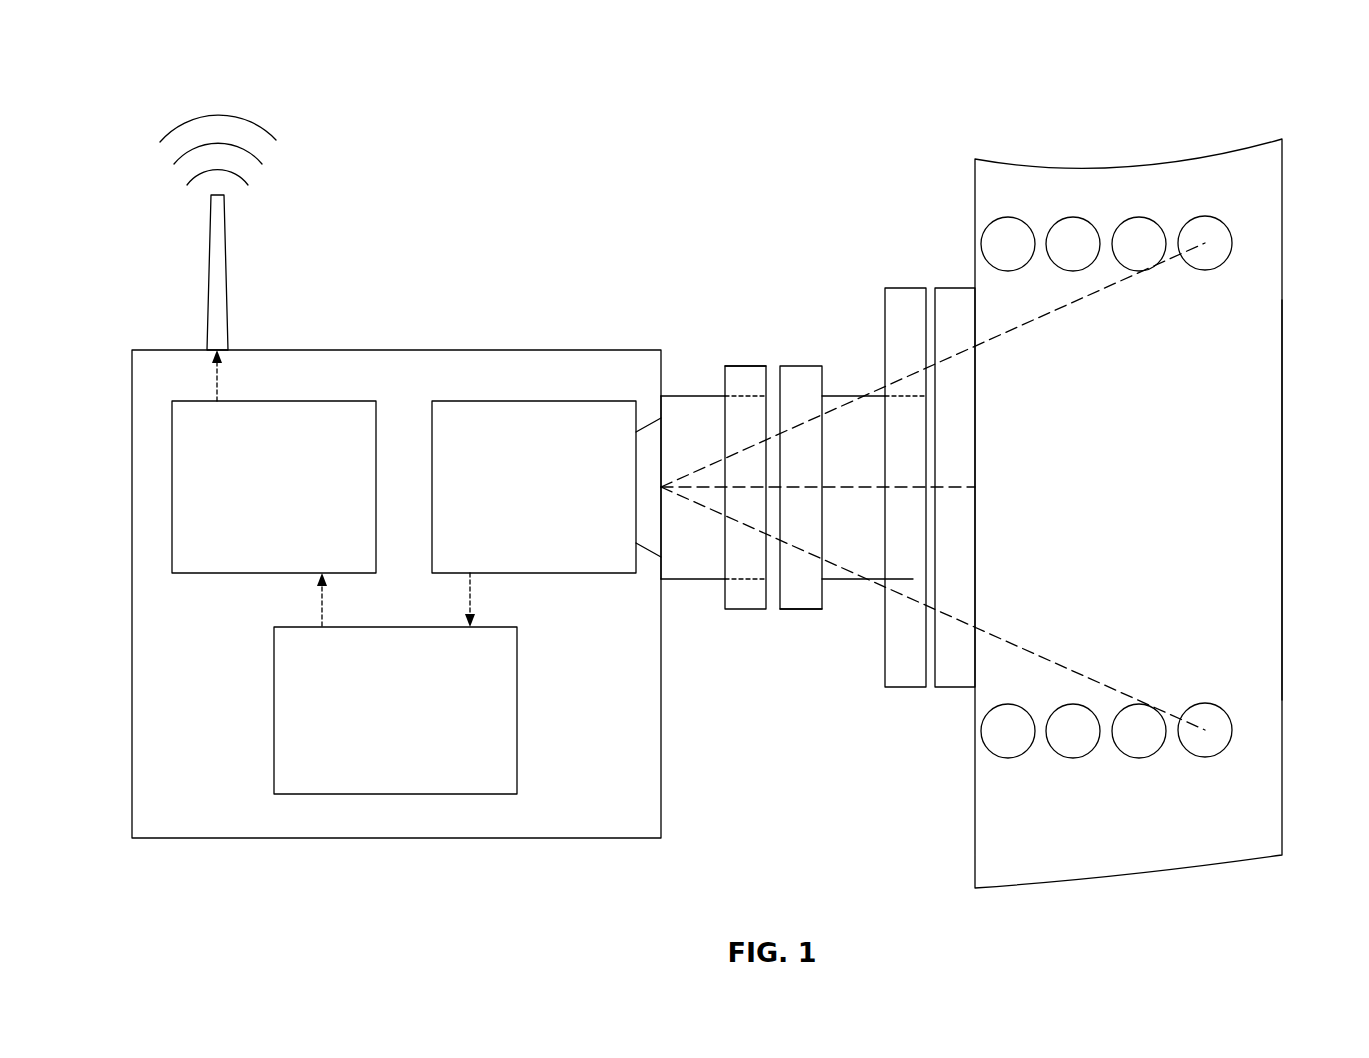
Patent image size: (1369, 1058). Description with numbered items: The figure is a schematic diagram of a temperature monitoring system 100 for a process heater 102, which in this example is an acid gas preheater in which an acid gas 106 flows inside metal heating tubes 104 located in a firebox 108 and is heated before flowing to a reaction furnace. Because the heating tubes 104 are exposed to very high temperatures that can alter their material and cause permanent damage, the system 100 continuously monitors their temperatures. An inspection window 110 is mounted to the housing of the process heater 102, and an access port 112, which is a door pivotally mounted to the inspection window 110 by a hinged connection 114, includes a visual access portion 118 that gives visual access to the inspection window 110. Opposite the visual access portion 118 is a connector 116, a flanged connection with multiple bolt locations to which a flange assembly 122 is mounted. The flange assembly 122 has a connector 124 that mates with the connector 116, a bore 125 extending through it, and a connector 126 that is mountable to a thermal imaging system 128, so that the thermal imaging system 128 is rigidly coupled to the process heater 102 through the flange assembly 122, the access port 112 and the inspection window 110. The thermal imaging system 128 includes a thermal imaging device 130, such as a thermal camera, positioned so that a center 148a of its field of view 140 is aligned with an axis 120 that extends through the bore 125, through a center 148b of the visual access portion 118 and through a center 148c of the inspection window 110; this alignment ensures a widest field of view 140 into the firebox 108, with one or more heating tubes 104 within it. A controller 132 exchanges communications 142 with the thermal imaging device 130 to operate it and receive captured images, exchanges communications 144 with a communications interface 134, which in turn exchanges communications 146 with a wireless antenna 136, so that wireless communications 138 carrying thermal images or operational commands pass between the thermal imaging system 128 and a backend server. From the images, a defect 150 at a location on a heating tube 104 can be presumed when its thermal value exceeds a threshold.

The temperature monitoring system 100 is at (202, 70).
The process heater 102 is at (1065, 130).
The heating tubes 104 is at (1007, 271).
The acid gas 106 is at (1007, 243).
The firebox 108 is at (1268, 518).
The inspection window 110 is at (960, 688).
The access port 112 is at (843, 385).
The hinged connection 114 is at (906, 287).
The connector 116 is at (807, 365).
The visual access portion 118 is at (913, 580).
The axis 120 is at (682, 488).
The flange assembly 122 is at (694, 385).
The connector 124 is at (755, 395).
The bore 125 is at (765, 365).
The connector 126 is at (661, 407).
The thermal imaging system 128 is at (598, 850).
The thermal imaging device 130 is at (546, 487).
The controller 132 is at (395, 710).
The communications interface 134 is at (274, 487).
The wireless antenna 136 is at (228, 280).
The wireless communications 138 is at (252, 178).
The field of view 140 is at (808, 553).
The communications 142 is at (471, 607).
The communications 144 is at (322, 615).
The communications 146 is at (220, 388).
The center of field of view 148a is at (661, 488).
The center of visual access portion 148b is at (923, 488).
The center of inspection window 148c is at (975, 487).
The defect 150 is at (1212, 705).